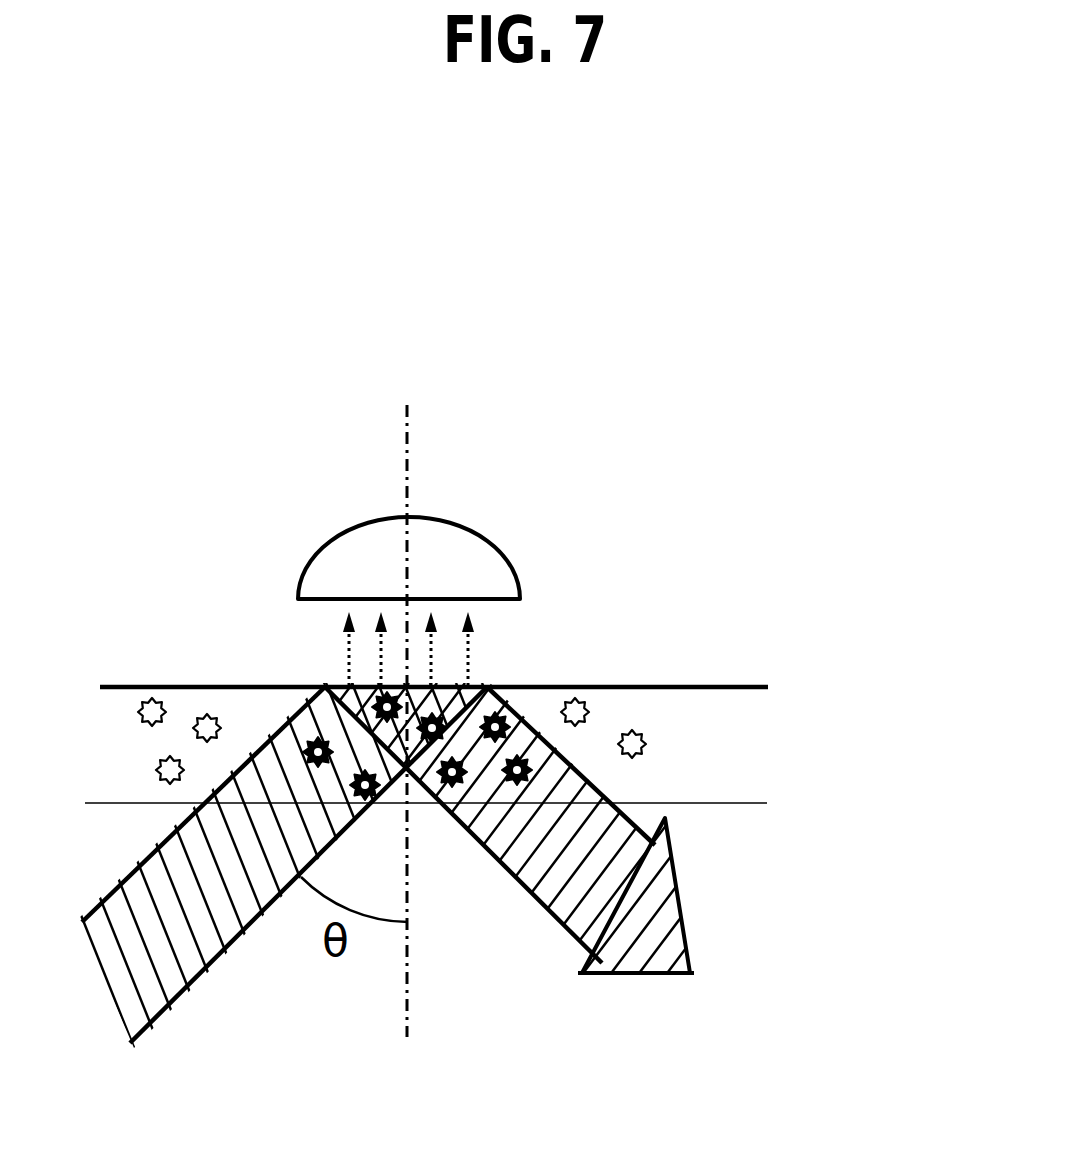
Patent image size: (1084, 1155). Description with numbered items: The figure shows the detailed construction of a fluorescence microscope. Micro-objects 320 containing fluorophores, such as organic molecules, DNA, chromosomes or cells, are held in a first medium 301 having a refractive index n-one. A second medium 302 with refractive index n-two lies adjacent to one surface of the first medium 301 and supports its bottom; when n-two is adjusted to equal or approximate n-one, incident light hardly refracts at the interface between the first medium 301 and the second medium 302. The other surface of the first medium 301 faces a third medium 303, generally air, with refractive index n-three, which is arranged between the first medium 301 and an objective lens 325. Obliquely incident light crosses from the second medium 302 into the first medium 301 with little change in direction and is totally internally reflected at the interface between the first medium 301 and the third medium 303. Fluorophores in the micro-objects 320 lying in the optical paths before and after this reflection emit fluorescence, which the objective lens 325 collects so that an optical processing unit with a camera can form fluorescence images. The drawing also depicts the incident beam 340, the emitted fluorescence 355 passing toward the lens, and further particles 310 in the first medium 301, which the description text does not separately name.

The first medium 301 is at (760, 758).
The second medium 302 is at (777, 853).
The third medium 303 is at (717, 647).
The unbound / unlabeled molecules 310 is at (152, 700).
The micro-objects 320 is at (497, 783).
The objective lens 325 is at (498, 548).
The incident excitation beam 340 is at (200, 977).
The emitted light 355 is at (336, 664).